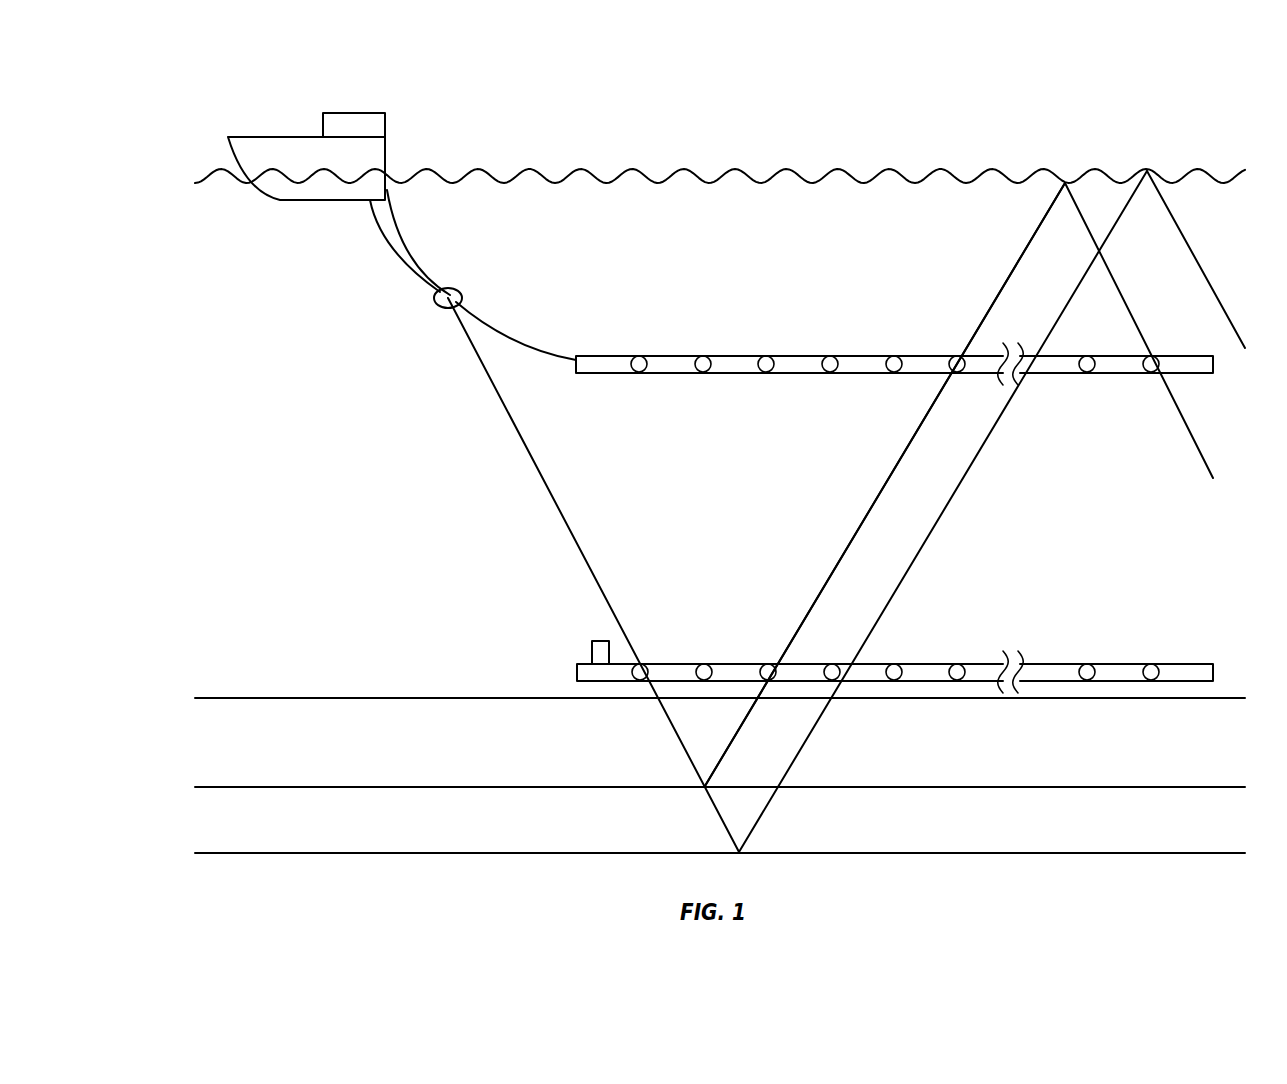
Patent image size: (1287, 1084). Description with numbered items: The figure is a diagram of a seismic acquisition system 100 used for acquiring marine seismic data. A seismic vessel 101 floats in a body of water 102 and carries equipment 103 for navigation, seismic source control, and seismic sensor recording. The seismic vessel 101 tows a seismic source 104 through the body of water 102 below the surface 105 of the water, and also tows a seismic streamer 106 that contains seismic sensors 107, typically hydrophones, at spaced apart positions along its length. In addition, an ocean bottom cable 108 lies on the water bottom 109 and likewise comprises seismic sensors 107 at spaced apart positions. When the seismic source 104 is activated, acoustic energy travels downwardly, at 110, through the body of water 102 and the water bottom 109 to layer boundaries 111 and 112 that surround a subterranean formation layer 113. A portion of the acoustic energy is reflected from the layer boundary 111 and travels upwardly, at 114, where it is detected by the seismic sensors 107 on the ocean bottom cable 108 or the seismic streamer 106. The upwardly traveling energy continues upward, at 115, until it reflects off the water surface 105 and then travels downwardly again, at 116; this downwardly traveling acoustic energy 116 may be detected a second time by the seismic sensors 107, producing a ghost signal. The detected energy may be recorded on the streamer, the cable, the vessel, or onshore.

The seismic acquisition system 100 is at (247, 522).
The seismic vessel 101 is at (280, 137).
The body of water 102 is at (325, 399).
The equipment 103 is at (353, 113).
The seismic source 104 is at (442, 308).
The surface of the water 105 is at (732, 169).
The seismic streamer 106 is at (731, 331).
The seismic sensors 107 is at (894, 356).
The ocean bottom cable 108 is at (733, 644).
The water bottom 109 is at (347, 698).
The downwardly traveling acoustic energy 110 is at (547, 490).
The layer boundary 111 is at (347, 787).
The layer boundary 112 is at (347, 853).
The subterranean formation layer 113 is at (500, 827).
The upwardly traveling acoustic energy 114 is at (872, 503).
The upwardly traveling acoustic energy 115 is at (1018, 262).
The downwardly traveling acoustic energy 116 is at (1128, 307).